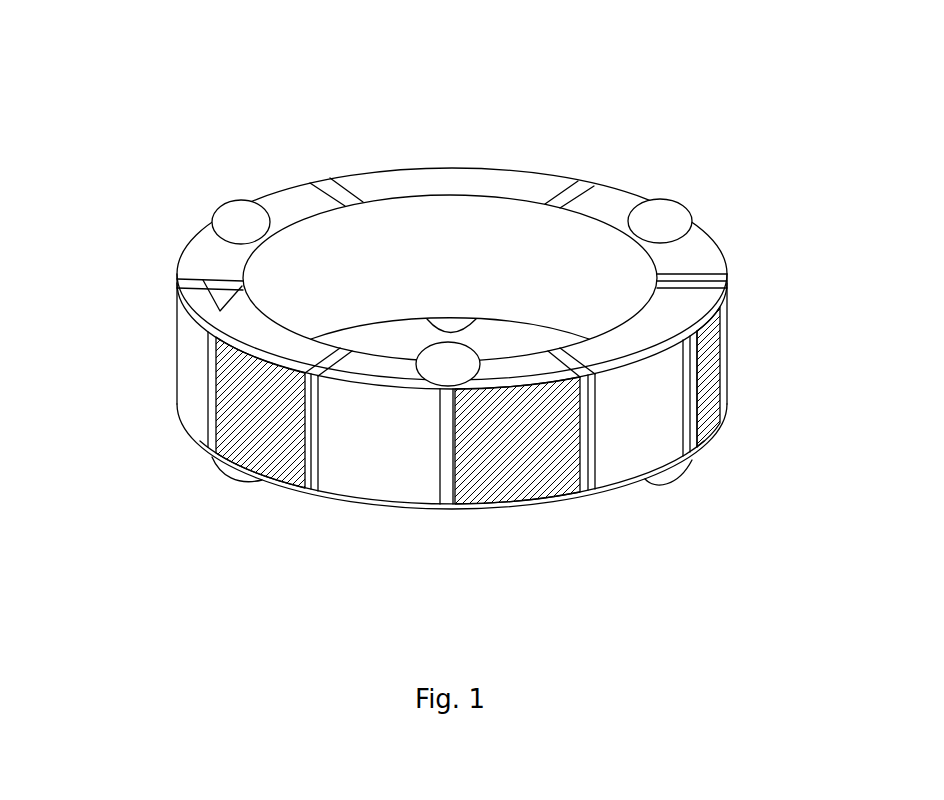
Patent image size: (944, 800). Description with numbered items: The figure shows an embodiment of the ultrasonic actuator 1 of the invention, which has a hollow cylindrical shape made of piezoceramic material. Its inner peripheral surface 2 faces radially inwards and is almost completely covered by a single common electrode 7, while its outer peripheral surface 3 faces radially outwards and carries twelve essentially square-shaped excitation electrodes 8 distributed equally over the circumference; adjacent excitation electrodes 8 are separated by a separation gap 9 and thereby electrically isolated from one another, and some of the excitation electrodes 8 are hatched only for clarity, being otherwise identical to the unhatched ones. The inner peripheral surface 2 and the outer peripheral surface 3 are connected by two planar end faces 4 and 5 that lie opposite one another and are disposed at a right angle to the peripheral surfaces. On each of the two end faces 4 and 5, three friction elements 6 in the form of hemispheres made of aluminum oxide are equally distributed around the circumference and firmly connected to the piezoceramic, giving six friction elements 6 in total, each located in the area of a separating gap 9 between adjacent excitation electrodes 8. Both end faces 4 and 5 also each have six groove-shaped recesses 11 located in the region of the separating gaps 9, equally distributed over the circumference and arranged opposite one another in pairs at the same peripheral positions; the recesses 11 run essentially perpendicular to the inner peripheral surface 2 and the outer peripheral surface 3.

The ultrasonic actuator 1 is at (671, 139).
The inner peripheral surface 2 is at (565, 278).
The outer peripheral surface 3 is at (308, 438).
The end face 4 is at (245, 271).
The end face 5 is at (465, 513).
The friction element 6 is at (243, 213).
The common electrode 7 is at (424, 247).
The excitation electrode 8 is at (190, 366).
The separation gap 9 is at (586, 462).
The groove-shaped recess 11 is at (336, 185).